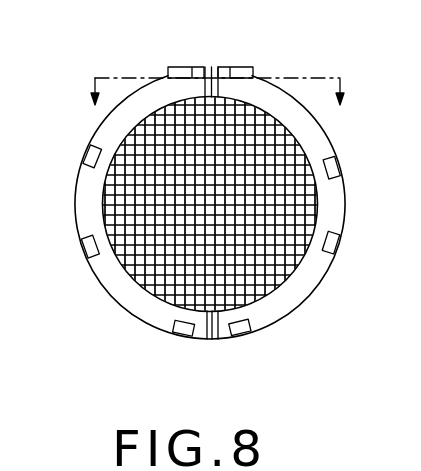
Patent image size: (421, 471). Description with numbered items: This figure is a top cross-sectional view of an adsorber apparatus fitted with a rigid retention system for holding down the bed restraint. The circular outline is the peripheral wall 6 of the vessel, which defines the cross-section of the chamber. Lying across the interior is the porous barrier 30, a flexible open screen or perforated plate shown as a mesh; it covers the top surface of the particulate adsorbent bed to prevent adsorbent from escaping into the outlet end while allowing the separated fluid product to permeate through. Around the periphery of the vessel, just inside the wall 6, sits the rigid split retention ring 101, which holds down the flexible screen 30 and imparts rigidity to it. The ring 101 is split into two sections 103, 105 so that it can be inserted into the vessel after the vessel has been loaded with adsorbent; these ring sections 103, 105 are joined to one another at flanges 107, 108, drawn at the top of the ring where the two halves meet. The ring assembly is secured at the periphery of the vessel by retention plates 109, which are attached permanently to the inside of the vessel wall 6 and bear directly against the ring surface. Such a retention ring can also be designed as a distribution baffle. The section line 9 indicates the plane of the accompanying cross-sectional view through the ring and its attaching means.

The peripheral wall 6 is at (323, 276).
The section line 9- 9 is at (218, 85).
The porous barrier 30 is at (158, 265).
The rigid split retention ring 101 is at (300, 298).
The ring section 103 is at (155, 320).
The ring section 105 is at (272, 320).
The flange 107 is at (216, 67).
The flange 108 is at (203, 67).
The retention plate 109 is at (80, 150).